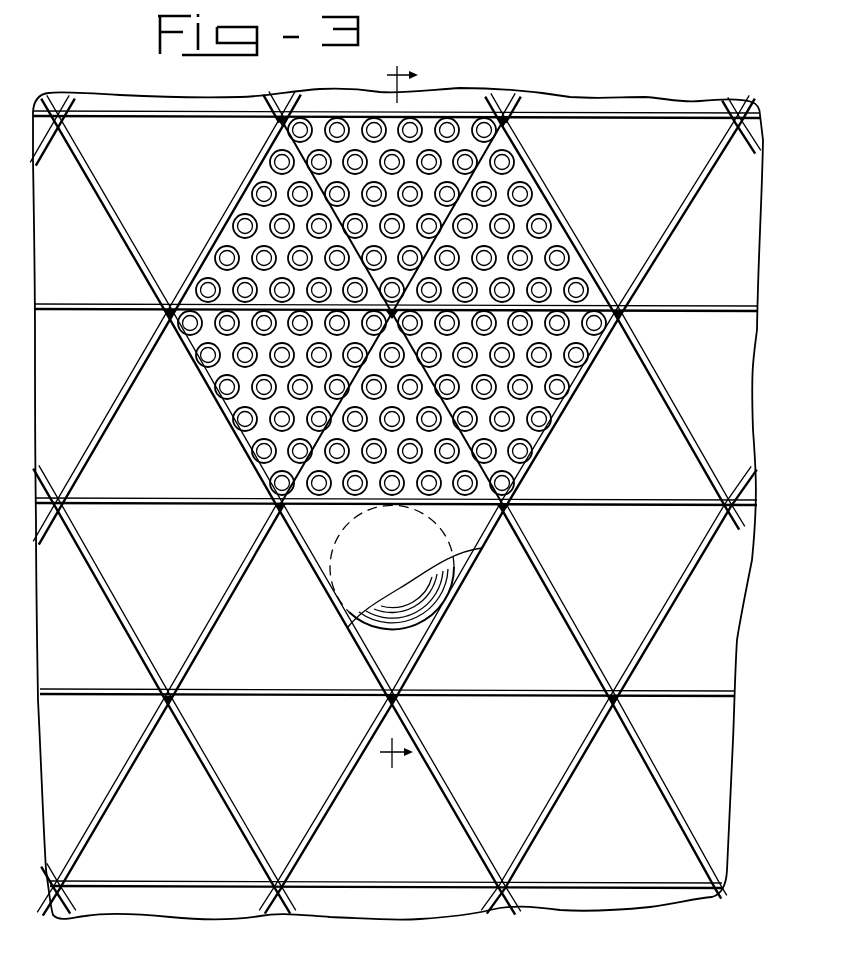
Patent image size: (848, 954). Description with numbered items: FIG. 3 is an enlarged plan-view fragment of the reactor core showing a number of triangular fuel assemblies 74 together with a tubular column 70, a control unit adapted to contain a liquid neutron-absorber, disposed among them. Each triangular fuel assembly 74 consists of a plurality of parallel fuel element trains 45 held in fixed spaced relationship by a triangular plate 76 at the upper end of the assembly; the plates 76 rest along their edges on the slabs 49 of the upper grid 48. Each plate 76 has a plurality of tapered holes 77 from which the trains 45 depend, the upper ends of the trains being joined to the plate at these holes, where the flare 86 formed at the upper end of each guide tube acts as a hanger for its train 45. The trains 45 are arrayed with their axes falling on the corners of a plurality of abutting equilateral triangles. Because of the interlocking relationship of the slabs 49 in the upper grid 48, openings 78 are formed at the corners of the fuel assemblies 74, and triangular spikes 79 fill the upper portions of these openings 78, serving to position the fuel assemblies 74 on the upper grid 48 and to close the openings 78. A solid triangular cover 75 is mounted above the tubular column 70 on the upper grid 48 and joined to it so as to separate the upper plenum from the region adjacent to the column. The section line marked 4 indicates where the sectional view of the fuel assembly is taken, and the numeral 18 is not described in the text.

The upper grid 48 is at (601, 106).
The slabs of upper grid 49 is at (741, 107).
The triangular plate 76 is at (328, 122).
The triangular fuel assemblies 74 is at (408, 306).
The fuel element trains 45 is at (262, 194).
The tapered holes 77 is at (562, 256).
The flare 86 is at (548, 456).
The triangular spikes 79 is at (624, 314).
The openings 78 is at (615, 694).
The rib junction 18 is at (173, 697).
The solid triangular cover 75 is at (330, 582).
The tubular column 70 is at (386, 618).
The section line 4- 4 is at (411, 425).